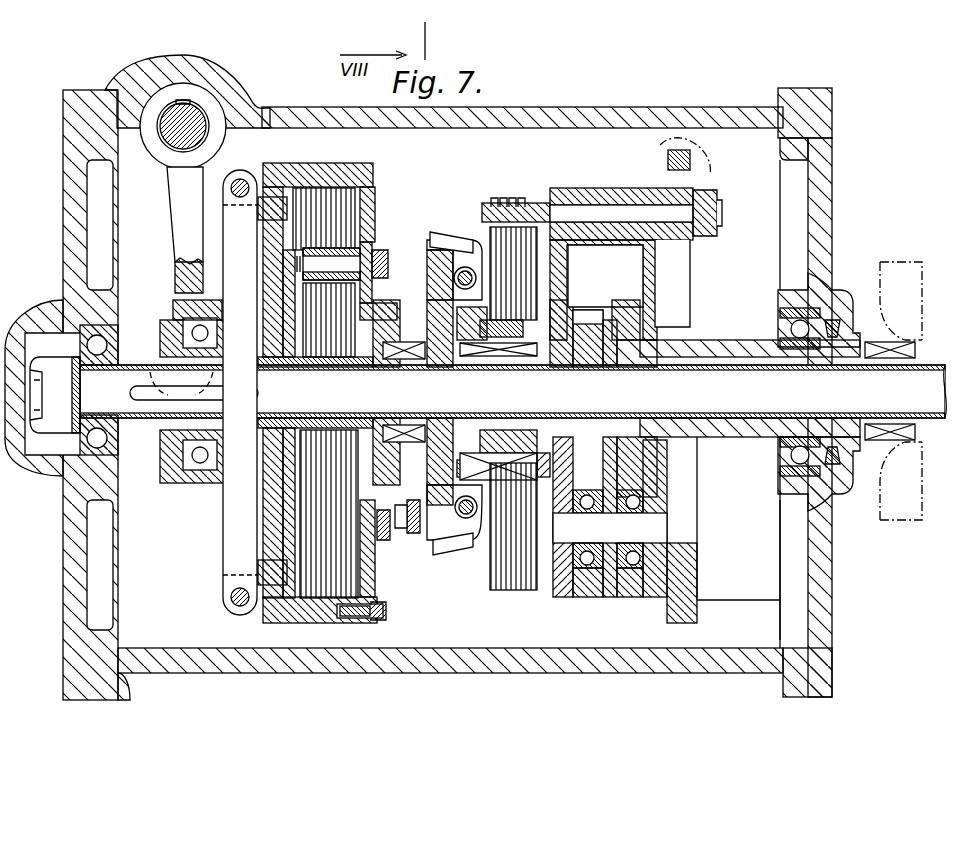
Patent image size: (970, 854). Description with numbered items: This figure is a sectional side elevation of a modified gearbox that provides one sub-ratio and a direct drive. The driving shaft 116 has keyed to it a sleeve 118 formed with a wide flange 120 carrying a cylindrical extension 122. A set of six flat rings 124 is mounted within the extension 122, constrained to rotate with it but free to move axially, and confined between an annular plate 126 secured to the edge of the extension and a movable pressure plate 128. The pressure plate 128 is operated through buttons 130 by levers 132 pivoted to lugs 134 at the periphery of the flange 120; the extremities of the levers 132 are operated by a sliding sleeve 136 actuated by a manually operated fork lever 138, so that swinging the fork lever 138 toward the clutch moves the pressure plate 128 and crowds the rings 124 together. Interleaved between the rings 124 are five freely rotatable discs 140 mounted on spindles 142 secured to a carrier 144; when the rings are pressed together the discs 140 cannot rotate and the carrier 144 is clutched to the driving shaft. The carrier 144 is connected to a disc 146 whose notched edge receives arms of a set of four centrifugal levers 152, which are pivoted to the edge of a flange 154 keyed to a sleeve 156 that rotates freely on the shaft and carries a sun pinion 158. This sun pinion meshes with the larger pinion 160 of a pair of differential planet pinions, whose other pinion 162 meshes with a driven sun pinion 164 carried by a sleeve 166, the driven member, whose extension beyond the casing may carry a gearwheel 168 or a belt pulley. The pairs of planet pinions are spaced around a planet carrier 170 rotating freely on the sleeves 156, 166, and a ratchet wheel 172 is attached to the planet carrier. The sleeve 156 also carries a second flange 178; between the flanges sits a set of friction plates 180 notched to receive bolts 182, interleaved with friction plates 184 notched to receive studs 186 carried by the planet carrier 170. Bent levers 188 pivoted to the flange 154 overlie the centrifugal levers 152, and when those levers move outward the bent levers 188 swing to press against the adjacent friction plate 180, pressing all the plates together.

The driving shaft 116 is at (827, 278).
The sleeve 118 is at (150, 362).
The wide flange 120 is at (277, 502).
The cylindrical extension 122 is at (320, 618).
The flat rings 124 is at (342, 187).
The annular plate 126 is at (372, 160).
The pressure plate 128 is at (278, 183).
The buttons 130 is at (273, 208).
The levers 132 is at (245, 553).
The lugs 134 is at (258, 615).
The sliding sleeve 136 is at (170, 460).
The fork lever 138 is at (185, 208).
The discs 140 is at (355, 295).
The spindles 142 is at (360, 243).
The carrier 144 is at (370, 497).
The disc 146 is at (452, 224).
The centrifugal levers 152 is at (448, 253).
The flange 154 is at (467, 270).
The sleeve 156 is at (557, 350).
The sun pinion 158 is at (590, 300).
The larger pinion 160 is at (590, 573).
The pinion 162 is at (628, 573).
The driven sun pinion 164 is at (630, 318).
The sleeve 166 is at (710, 343).
The gearwheel 168 is at (910, 497).
The planet carrier 170 is at (630, 193).
The ratchet wheel 172 is at (683, 560).
The second flange 178 is at (537, 227).
The friction plates 180 is at (507, 368).
The bolts 182 is at (475, 436).
The friction plates 184 is at (508, 583).
The studs 186 is at (500, 203).
The bent levers 188 is at (467, 527).